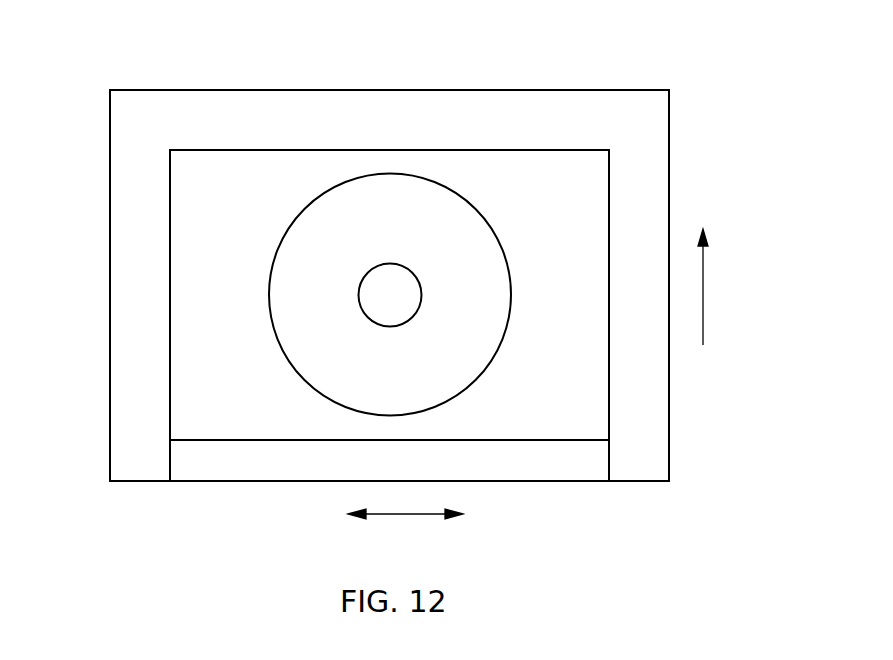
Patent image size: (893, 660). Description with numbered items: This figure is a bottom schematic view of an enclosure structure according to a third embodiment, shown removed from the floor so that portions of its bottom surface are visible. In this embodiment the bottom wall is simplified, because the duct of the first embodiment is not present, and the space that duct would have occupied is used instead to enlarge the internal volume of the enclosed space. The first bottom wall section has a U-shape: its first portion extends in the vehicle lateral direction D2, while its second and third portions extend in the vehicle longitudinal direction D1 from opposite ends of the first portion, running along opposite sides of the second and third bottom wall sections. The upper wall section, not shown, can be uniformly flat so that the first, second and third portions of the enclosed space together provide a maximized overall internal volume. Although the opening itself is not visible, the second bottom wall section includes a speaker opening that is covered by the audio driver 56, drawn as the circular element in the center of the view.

The audio driver 56 is at (441, 364).
The vehicle longitudinal direction D1 is at (705, 290).
The vehicle lateral direction D2 is at (411, 516).